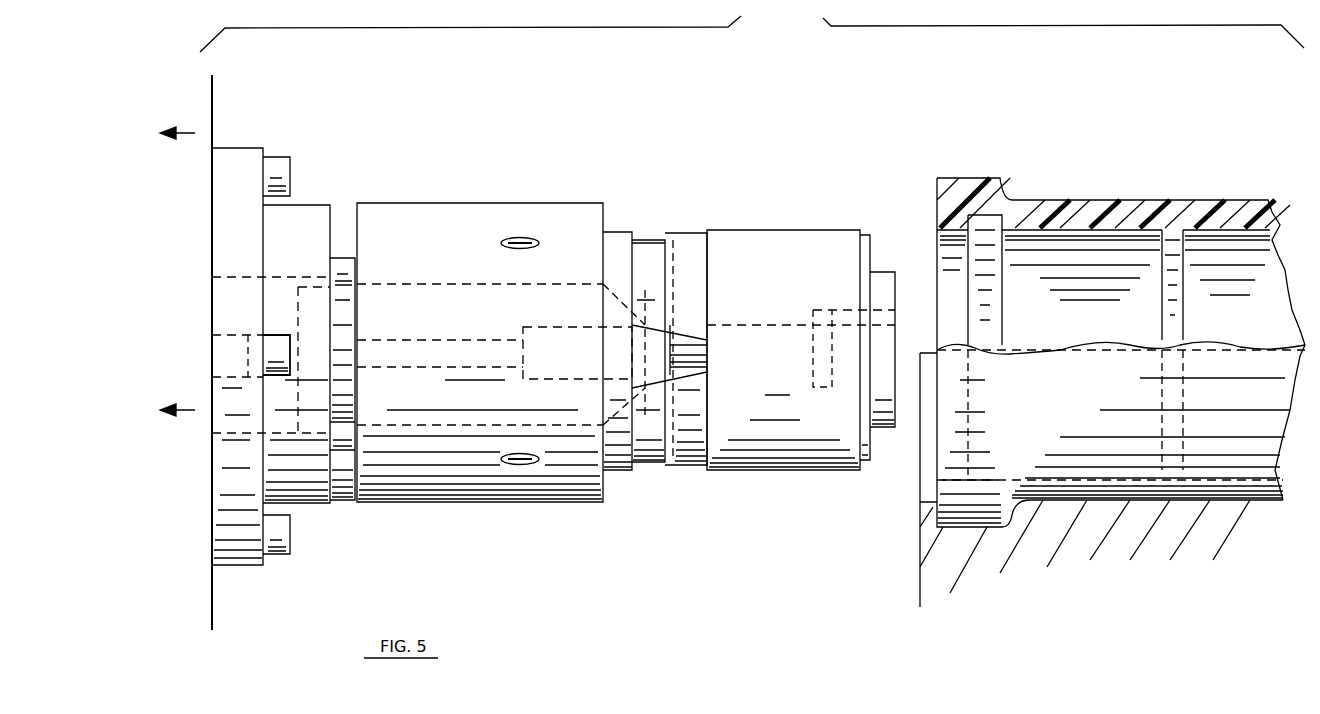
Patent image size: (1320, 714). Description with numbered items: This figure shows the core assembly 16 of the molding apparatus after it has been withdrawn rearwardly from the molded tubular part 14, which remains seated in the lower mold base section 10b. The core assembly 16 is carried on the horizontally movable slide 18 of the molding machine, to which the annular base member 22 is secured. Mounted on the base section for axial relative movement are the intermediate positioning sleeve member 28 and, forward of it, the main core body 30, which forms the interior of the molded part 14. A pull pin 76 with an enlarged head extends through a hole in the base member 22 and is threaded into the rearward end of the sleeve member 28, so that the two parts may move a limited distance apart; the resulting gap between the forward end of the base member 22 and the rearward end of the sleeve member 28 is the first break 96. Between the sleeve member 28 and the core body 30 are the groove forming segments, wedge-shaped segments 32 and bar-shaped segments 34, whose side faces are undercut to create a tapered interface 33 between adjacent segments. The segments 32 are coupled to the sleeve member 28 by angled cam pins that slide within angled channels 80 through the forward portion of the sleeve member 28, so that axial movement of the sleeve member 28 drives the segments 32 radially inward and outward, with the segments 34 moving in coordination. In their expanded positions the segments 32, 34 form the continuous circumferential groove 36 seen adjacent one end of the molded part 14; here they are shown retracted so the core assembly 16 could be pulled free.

The mold base section 10b is at (955, 550).
The tubular part 14 is at (1100, 193).
The core assembly 16 is at (553, 185).
The slide 18 is at (212, 105).
The base member 22 is at (302, 200).
The positioning sleeve member 28 is at (426, 200).
The main core body 30 is at (767, 242).
The segments 32 is at (692, 243).
The tapered interface 33 is at (648, 325).
The segments 34 is at (652, 245).
The circumferential groove 36 is at (1000, 225).
The pull pin 76 is at (352, 275).
The angled channel 80 is at (518, 238).
The first break 96 is at (343, 240).